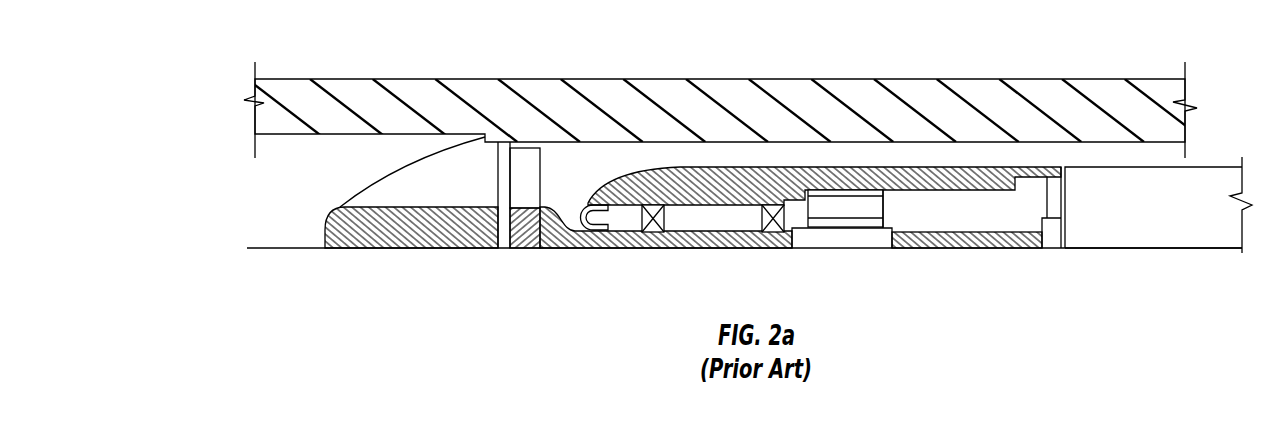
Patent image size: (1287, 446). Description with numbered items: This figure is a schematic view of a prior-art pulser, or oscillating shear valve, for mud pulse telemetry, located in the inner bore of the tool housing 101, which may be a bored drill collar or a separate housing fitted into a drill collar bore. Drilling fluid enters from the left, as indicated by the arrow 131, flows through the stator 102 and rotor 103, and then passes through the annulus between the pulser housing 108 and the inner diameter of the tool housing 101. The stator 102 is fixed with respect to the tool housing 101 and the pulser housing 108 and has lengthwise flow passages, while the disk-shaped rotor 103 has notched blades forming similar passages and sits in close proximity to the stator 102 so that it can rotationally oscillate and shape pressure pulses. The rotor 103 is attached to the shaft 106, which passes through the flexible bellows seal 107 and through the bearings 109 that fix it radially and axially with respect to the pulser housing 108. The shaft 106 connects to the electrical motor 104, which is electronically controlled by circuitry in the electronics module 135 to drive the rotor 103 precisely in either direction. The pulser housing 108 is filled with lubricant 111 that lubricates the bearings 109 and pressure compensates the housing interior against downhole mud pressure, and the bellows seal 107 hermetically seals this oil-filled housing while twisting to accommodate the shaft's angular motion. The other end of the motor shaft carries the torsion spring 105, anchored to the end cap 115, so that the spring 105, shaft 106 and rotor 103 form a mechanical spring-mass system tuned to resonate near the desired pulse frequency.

The tool housing 101 is at (318, 79).
The stator 102 is at (437, 149).
The rotor 103 is at (530, 148).
The electrical motor 104 is at (842, 190).
The torsion spring 105 is at (970, 231).
The shaft 106 is at (555, 207).
The flexible bellows seal 107 is at (598, 230).
The pulser housing 108 is at (737, 167).
The bearings 109 is at (658, 232).
The lubricant 111 is at (946, 222).
The end cap 115 is at (1058, 200).
The insertion direction 131 is at (265, 187).
The electronics module 135 is at (1195, 167).